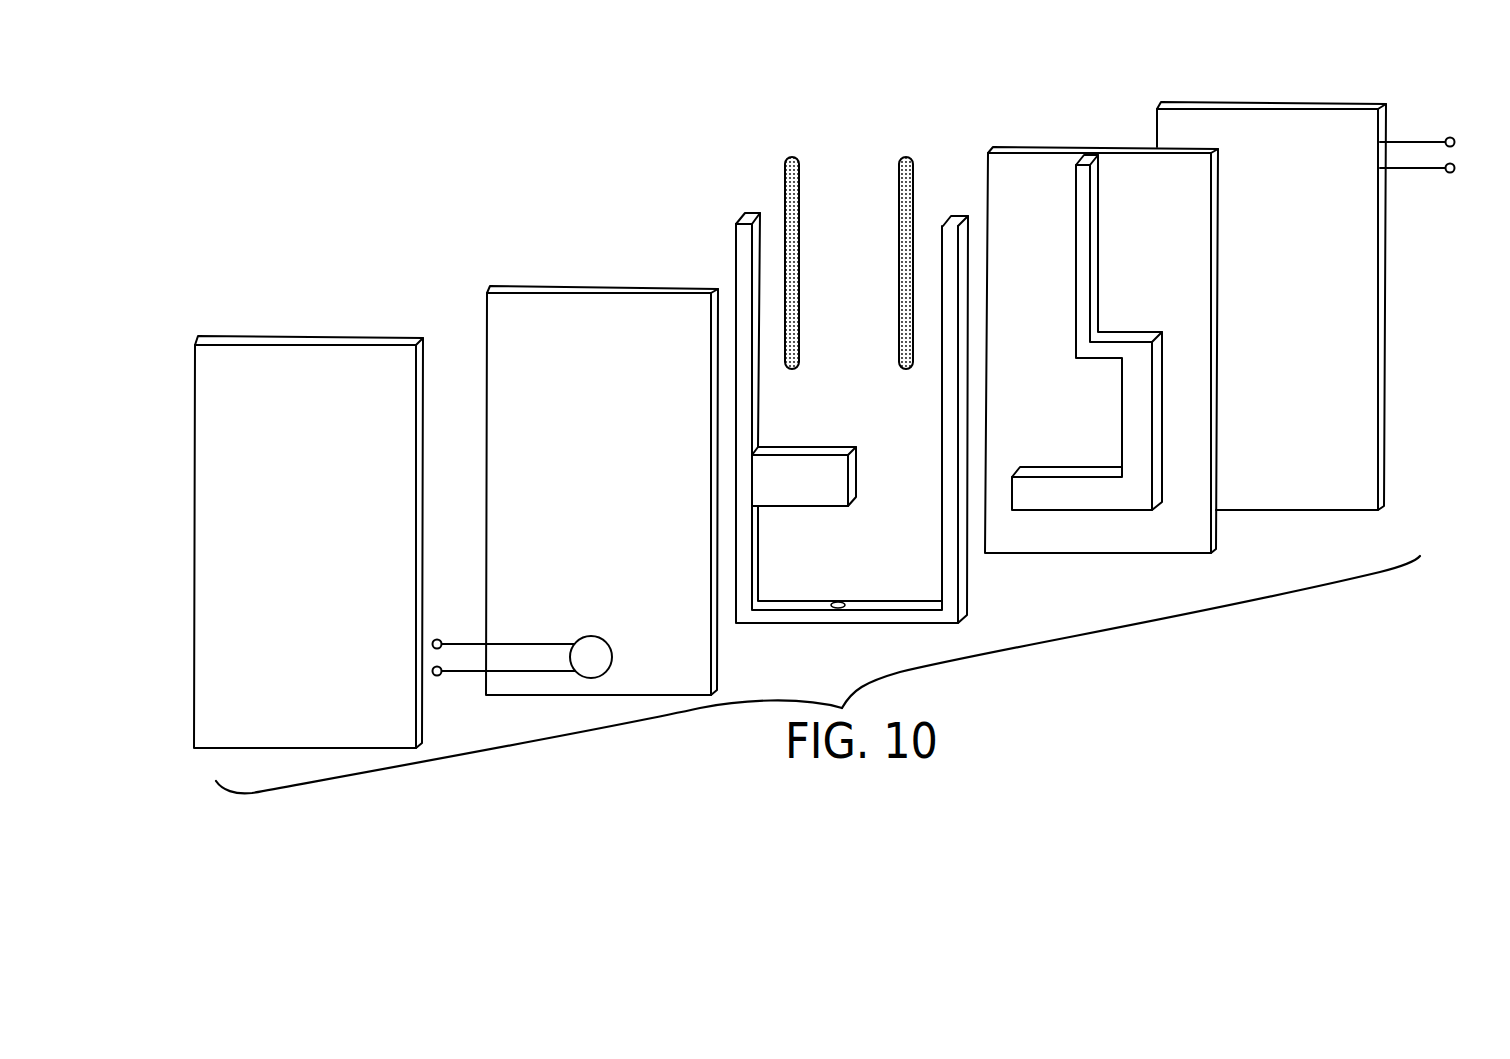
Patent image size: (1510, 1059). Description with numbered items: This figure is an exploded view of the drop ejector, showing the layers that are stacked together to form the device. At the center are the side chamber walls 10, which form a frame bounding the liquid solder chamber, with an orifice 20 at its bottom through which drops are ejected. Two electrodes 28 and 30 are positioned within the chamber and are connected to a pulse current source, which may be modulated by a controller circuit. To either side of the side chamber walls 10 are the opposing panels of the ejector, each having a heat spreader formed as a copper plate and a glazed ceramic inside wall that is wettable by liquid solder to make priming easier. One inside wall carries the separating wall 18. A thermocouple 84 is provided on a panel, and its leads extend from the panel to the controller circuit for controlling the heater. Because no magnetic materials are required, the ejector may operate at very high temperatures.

The side chamber walls 10 is at (743, 255).
The separating wall 18 is at (1132, 386).
The orifice 20 is at (837, 602).
The electrode 28 is at (787, 173).
The electrode 30 is at (913, 178).
The thermocouple 84 is at (593, 647).